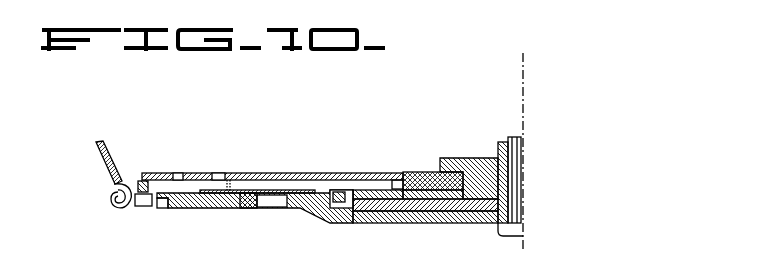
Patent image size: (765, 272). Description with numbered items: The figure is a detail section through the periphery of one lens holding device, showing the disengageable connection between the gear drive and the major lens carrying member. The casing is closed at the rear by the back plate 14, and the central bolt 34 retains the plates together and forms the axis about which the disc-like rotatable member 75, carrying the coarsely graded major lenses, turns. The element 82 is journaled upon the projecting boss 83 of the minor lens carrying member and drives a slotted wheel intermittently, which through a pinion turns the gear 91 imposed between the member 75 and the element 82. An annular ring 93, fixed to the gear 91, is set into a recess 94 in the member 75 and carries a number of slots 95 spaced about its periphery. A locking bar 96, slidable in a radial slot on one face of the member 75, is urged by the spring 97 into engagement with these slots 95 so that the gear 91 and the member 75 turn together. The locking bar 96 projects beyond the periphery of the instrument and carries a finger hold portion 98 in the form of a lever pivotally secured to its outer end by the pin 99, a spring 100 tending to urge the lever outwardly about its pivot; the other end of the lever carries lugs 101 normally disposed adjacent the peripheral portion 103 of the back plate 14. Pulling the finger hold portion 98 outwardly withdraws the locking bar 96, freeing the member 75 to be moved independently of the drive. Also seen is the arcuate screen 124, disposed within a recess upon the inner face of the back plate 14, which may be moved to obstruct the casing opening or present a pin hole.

The back plate 14 is at (318, 212).
The bolt 34 is at (518, 230).
The rotatable member 75 is at (257, 173).
The element 82 is at (462, 204).
The projecting boss 83 is at (480, 167).
The gear 91 is at (404, 194).
The annular ring 93 is at (427, 181).
The recess 94 is at (396, 178).
The slots 95 is at (404, 173).
The locking bar 96 is at (318, 180).
The spring 97 is at (262, 186).
The finger hold portion 98 is at (94, 152).
The pin 99 is at (116, 207).
The spring 100 is at (118, 190).
The lugs 101 is at (145, 206).
The peripheral portion 103 is at (165, 208).
The screen 124 is at (237, 208).